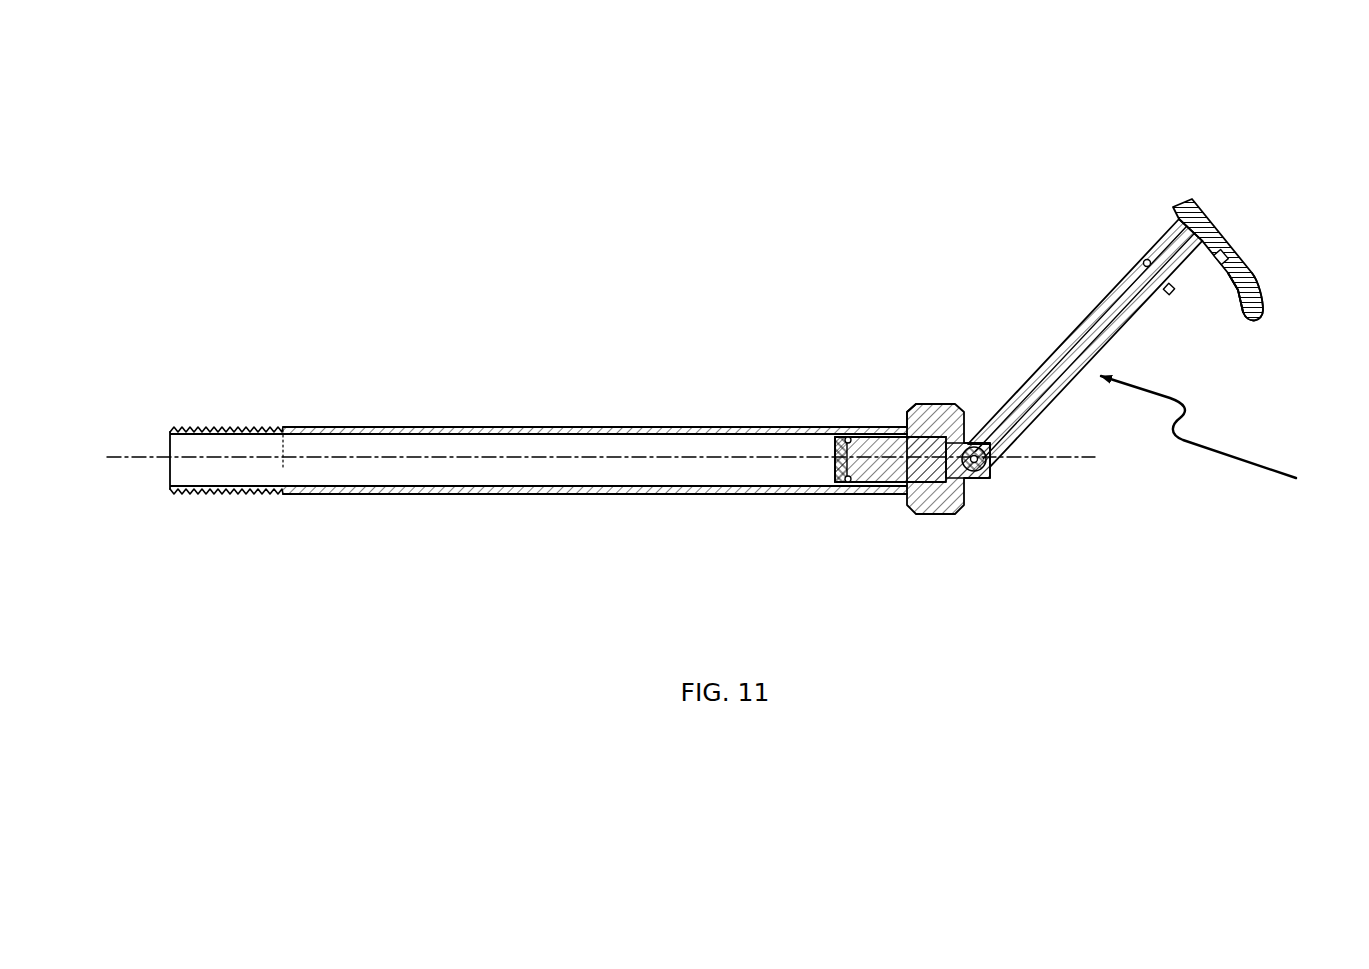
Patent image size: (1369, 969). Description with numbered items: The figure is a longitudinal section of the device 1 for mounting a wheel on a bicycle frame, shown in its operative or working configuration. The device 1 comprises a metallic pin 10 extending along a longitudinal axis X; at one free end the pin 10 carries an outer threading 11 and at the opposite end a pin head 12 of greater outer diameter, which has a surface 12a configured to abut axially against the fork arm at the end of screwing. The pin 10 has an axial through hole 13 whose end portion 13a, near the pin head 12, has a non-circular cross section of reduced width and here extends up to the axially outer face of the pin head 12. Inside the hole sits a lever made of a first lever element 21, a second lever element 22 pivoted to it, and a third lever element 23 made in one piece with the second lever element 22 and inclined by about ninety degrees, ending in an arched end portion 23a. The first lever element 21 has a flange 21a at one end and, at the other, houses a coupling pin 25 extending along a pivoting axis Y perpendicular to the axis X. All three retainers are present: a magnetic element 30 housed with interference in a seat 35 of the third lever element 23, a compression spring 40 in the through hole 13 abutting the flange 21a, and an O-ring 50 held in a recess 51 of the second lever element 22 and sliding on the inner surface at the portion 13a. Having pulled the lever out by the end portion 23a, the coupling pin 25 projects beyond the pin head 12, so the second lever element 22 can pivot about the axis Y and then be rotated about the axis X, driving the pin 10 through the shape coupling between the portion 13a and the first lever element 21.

The device for mounting a wheel on a bicycle frame 1 is at (598, 253).
The pin 10 is at (505, 427).
The outer threading 11 is at (238, 497).
The pin head 12 is at (937, 503).
The surface 12a is at (907, 418).
The axial through hole 13 is at (378, 465).
The portion of the axial through hole 13a is at (885, 442).
The first lever element 21 is at (884, 462).
The flange 21a is at (832, 457).
The second lever element 22 is at (1060, 377).
The third lever element 23 is at (1210, 240).
The arched end portion 23a is at (1258, 285).
The coupling pin 25 is at (976, 463).
The magnetic element 30 is at (1262, 326).
The seat 35 is at (1218, 265).
The compression spring 40 is at (848, 472).
The O-ring 50 is at (1170, 292).
The recess 51 is at (1145, 261).
The longitudinal axis X is at (127, 457).
The pivoting axis Y is at (974, 462).